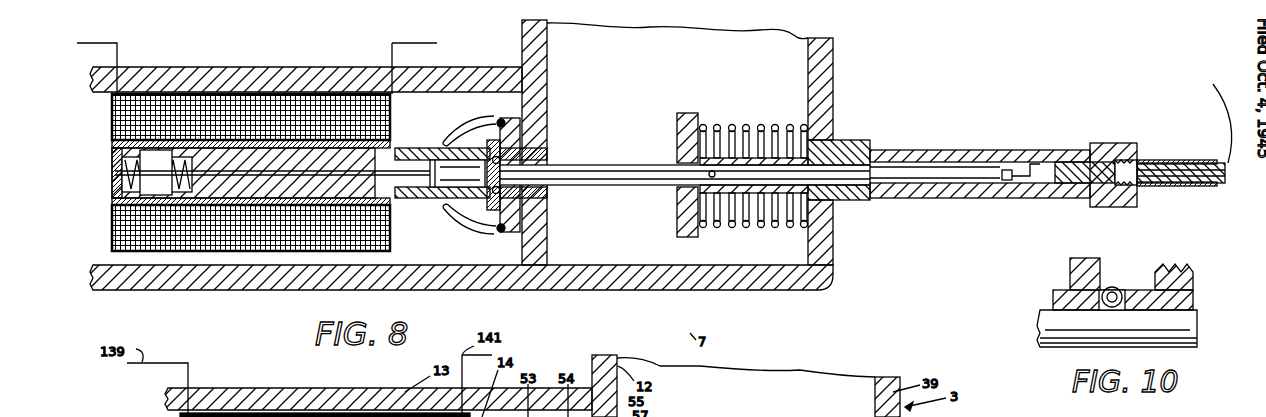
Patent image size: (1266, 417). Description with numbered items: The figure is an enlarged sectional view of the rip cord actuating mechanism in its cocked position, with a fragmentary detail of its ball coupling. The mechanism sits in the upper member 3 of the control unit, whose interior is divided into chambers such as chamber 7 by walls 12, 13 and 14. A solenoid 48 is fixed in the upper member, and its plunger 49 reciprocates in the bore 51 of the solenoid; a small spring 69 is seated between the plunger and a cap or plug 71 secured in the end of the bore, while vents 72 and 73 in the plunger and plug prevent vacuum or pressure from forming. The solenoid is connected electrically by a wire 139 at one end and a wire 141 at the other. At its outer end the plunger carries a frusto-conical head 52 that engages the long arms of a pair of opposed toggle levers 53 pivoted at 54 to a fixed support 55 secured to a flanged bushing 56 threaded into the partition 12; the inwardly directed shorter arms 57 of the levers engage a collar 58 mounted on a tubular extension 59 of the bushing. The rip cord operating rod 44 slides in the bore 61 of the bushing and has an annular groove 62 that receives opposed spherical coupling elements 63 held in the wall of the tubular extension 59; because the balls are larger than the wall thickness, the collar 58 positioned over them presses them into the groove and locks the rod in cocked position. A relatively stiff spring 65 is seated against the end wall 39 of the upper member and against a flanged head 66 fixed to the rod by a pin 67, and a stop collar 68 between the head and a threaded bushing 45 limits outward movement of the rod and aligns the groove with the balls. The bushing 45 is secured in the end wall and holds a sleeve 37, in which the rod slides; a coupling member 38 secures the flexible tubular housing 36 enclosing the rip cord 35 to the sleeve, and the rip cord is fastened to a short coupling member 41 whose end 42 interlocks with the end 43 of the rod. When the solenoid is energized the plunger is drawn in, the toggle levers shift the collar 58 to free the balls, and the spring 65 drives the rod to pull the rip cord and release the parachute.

In FIG. 8, the upper member 3 is at (842, 50).
In FIG. 8, the chamber 7 is at (650, 253).
In FIG. 8, the wall 12 is at (537, 53).
In FIG. 8, the wall 13 is at (314, 80).
In FIG. 8, the wall 14 is at (418, 258).
In FIG. 8, the rip cord 35 is at (1224, 163).
In FIG. 8, the flexible tubular housing 36 is at (1190, 198).
In FIG. 8, the sleeve 37 is at (978, 198).
In FIG. 8, the coupling member 38 is at (1120, 145).
In FIG. 8, the end wall 39 is at (828, 85).
In FIG. 8, the short coupling member 41 is at (1066, 165).
In FIG. 8, the end of coupling member 42 is at (1008, 182).
In FIG. 8, the end of operating rod 43 is at (1028, 168).
In FIG. 8, the rip cord operating rod 44 is at (924, 170).
In FIG. 10, the rip cord operating rod 44 is at (1070, 325).
In FIG. 8, the threaded bushing 45 is at (845, 142).
In FIG. 8, the solenoid 48 is at (262, 262).
In FIG. 8, the plunger 49 is at (404, 158).
In FIG. 8, the bore 51 is at (112, 222).
In FIG. 8, the frusto-conical head 52 is at (452, 215).
In FIG. 8, the toggle levers 53 is at (458, 135).
In FIG. 8, the pivot 54 is at (500, 232).
In FIG. 8, the fixed support 55 is at (514, 210).
In FIG. 8, the flanged bushing 56 is at (548, 160).
In FIG. 10, the flanged bushing 56 is at (1192, 282).
In FIG. 8, the shorter arms 57 is at (505, 205).
In FIG. 8, the collar 58 is at (482, 214).
In FIG. 10, the collar 58 is at (1072, 262).
In FIG. 8, the tubular extension 59 is at (445, 202).
In FIG. 10, the tubular extension 59 is at (1053, 296).
In FIG. 8, the bore 61 is at (437, 167).
In FIG. 8, the annular groove 62 is at (500, 172).
In FIG. 8, the spherical coupling elements 63 is at (503, 152).
In FIG. 10, the spherical coupling elements 63 is at (1114, 290).
In FIG. 8, the spring 65 is at (735, 125).
In FIG. 8, the flanged head 66 is at (683, 113).
In FIG. 8, the pin 67 is at (720, 215).
In FIG. 8, the stop collar 68 is at (759, 155).
In FIG. 8, the spring 69 is at (120, 166).
In FIG. 8, the plug 71 is at (112, 192).
In FIG. 8, the vent 72 is at (185, 200).
In FIG. 8, the vent 73 is at (115, 173).
In FIG. 8, the wire 139 is at (101, 40).
In FIG. 8, the wire 141 is at (412, 43).